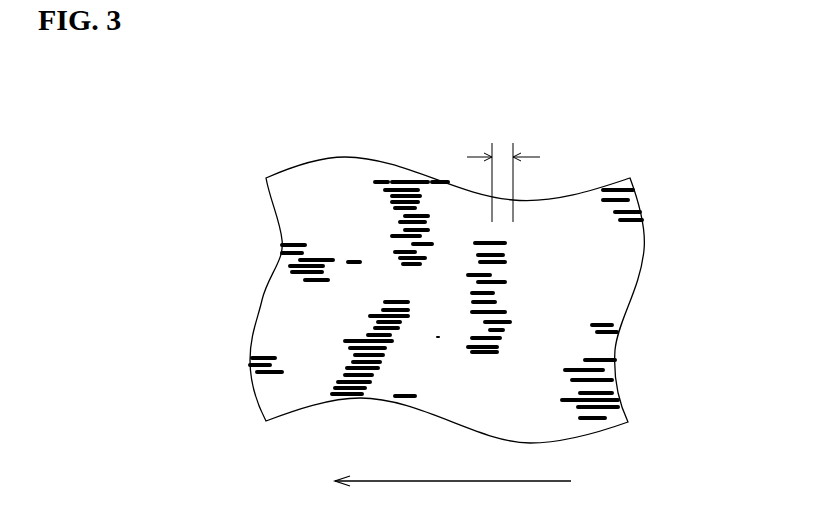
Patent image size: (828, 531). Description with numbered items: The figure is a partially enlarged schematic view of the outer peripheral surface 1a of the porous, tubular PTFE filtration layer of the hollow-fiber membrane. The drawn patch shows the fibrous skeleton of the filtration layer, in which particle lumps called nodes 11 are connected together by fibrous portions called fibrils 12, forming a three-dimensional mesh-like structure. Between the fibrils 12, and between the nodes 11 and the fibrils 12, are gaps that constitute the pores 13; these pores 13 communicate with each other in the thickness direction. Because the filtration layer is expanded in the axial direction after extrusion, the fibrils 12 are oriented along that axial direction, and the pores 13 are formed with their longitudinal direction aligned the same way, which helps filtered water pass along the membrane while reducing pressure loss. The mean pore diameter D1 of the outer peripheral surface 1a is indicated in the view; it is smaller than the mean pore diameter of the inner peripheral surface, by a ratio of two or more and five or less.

The outer peripheral surface 1a is at (331, 192).
The nodes 11 is at (585, 275).
The fibrils 12 is at (605, 375).
The pores 13 is at (513, 243).
The mean pore diameter of the outer peripheral surface D1 is at (503, 168).